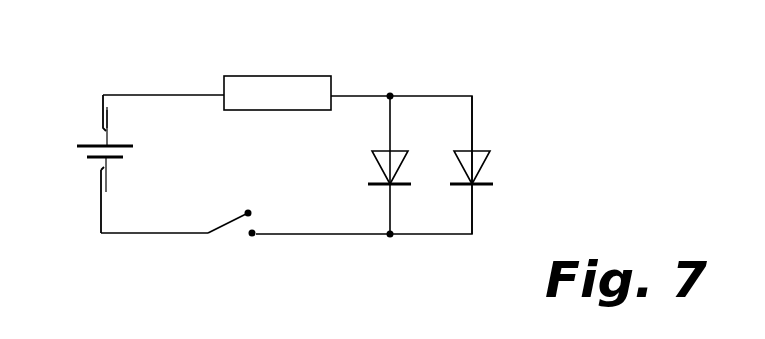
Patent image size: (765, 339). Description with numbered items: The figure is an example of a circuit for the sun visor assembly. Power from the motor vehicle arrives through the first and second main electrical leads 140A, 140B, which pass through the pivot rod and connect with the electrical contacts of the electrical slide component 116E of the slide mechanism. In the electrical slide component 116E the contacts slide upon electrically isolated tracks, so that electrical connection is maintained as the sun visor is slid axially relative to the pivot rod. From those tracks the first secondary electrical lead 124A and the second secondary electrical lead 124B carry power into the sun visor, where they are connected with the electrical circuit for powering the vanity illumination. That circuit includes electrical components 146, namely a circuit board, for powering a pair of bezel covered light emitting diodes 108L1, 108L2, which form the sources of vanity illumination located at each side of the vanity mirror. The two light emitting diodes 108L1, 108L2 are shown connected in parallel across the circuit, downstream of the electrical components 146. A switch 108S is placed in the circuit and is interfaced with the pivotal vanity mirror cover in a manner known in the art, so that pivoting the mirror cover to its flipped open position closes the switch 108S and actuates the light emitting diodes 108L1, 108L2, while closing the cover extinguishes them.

The second secondary electrical lead 124B is at (125, 93).
The second main electrical lead 140B is at (107, 117).
The electrical slide component 116E is at (112, 135).
The first main electrical lead 140A is at (107, 190).
The first secondary electrical lead 124A is at (120, 234).
The electrical components 146 is at (287, 75).
The switch 108S is at (233, 231).
The light emitting diode 108L1 is at (373, 158).
The light emitting diode 108L2 is at (487, 162).